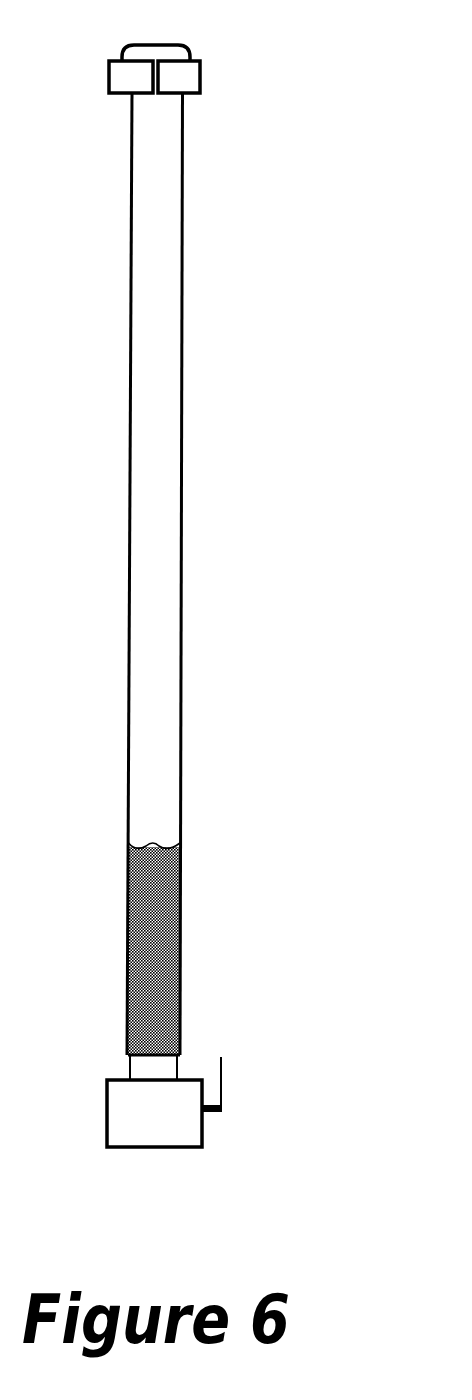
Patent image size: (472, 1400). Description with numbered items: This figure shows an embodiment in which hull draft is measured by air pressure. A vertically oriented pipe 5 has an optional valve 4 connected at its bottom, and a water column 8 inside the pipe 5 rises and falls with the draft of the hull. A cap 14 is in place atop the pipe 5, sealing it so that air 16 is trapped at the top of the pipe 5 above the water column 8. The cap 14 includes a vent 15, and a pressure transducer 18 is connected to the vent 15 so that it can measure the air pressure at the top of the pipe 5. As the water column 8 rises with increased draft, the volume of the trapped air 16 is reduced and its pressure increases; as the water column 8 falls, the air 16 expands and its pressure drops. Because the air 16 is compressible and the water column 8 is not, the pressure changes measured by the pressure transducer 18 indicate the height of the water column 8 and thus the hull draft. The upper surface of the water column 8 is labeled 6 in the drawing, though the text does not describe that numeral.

The valve 4 is at (107, 1093).
The pipe 5 is at (130, 272).
The liquid surface 6 is at (148, 845).
The water column 8 is at (142, 960).
The cap 14 is at (200, 78).
The vent 15 is at (158, 97).
The air 16 is at (158, 515).
The pressure transducer 18 is at (190, 50).